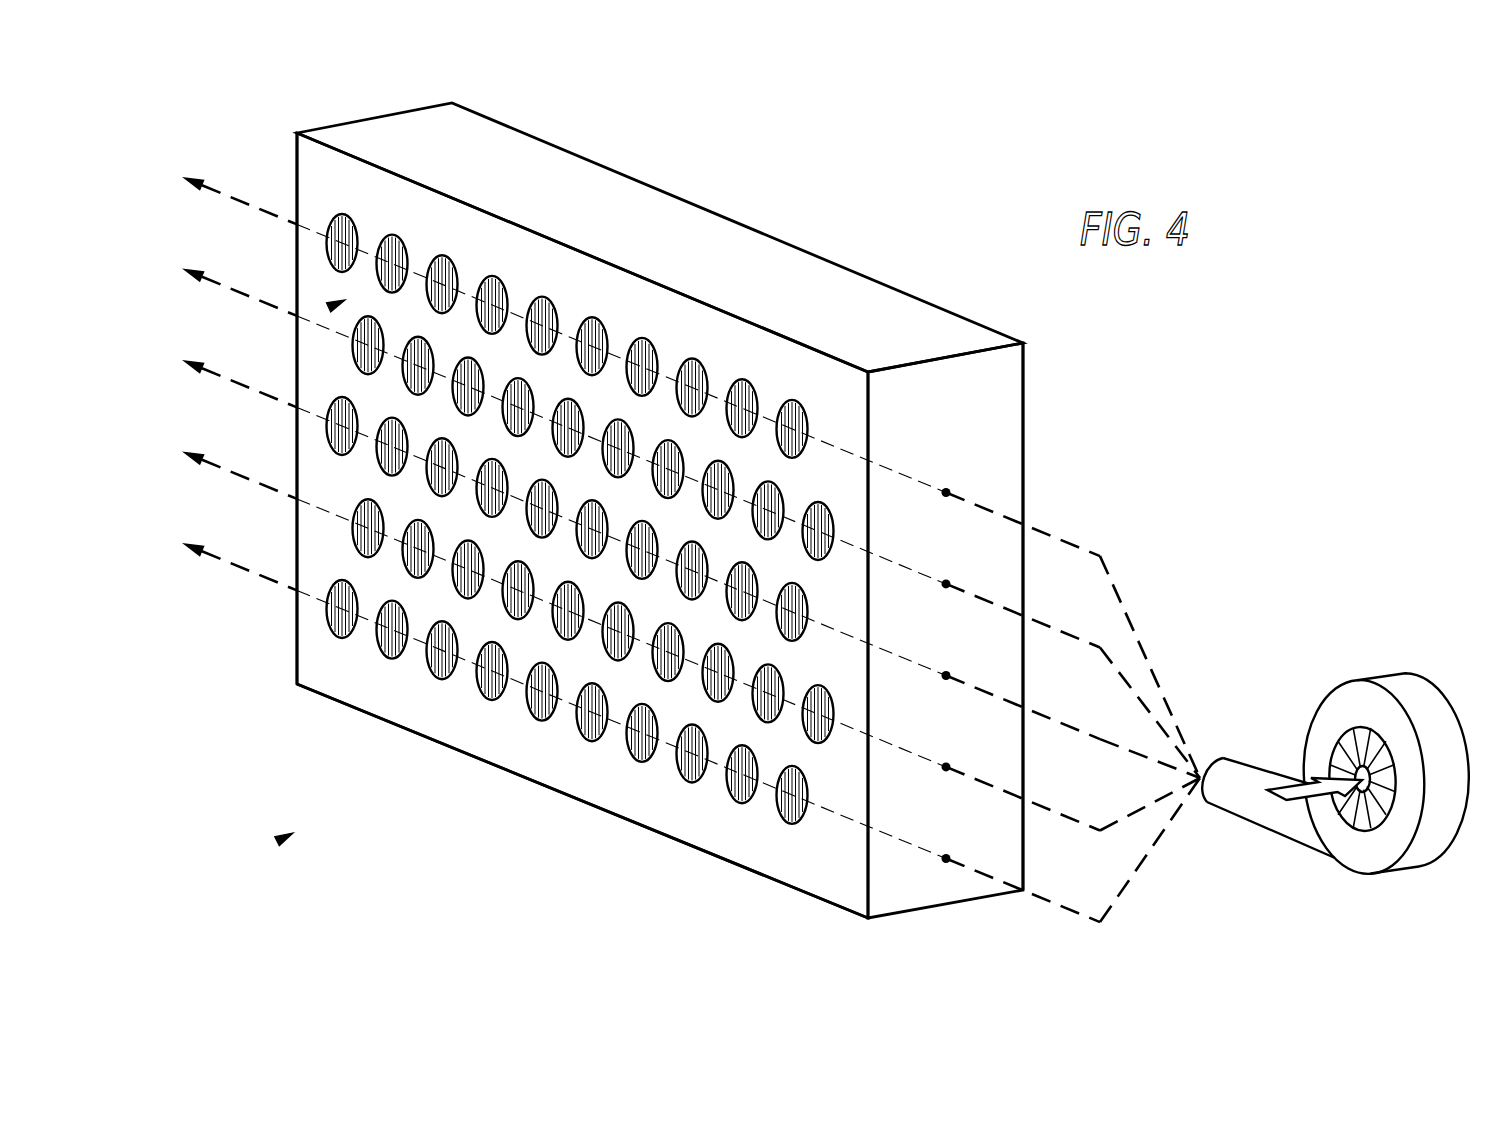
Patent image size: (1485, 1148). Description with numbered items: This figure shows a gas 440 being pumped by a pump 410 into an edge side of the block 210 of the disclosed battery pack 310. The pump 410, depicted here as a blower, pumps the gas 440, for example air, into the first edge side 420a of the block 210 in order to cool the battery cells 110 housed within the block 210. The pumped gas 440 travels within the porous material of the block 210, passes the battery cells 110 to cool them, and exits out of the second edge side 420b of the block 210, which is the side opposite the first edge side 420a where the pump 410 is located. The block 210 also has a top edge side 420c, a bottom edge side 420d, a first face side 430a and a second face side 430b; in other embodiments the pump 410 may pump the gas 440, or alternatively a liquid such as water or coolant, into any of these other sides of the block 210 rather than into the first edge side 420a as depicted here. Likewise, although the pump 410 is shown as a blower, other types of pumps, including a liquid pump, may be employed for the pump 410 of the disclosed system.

The battery cells 110 is at (645, 357).
The block 210 is at (343, 300).
The battery pack 310 is at (293, 833).
The pump 410 is at (1412, 700).
The first edge side 420a is at (982, 417).
The second edge side 420b is at (297, 172).
The top edge side 420c is at (617, 215).
The bottom edge side 420d is at (467, 753).
The first face side 430a is at (328, 662).
The second face side 430b is at (1025, 482).
The gas 440 is at (255, 388).